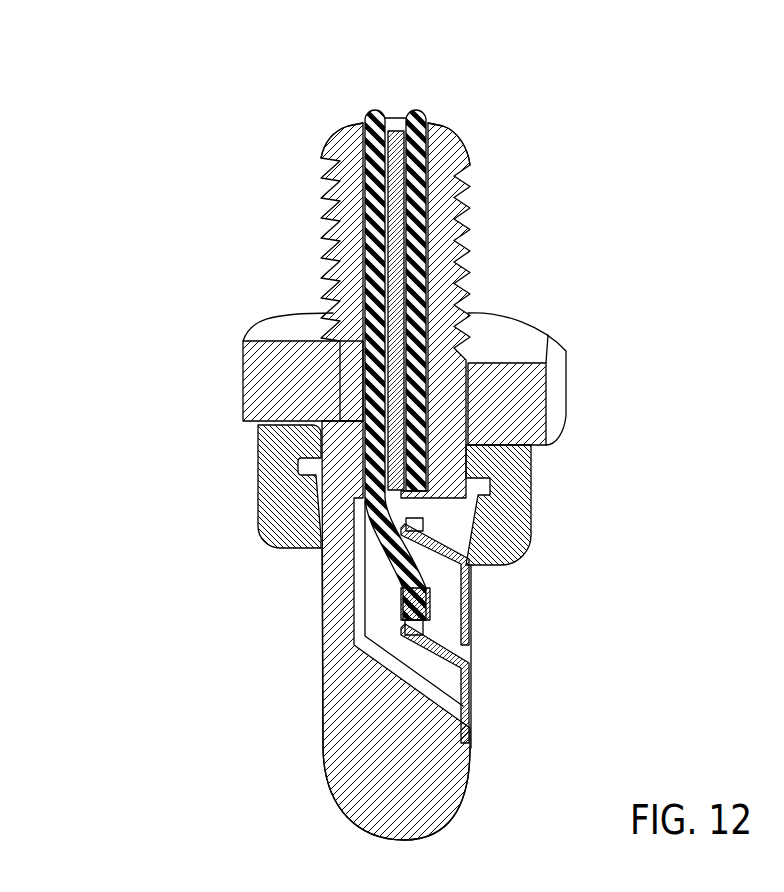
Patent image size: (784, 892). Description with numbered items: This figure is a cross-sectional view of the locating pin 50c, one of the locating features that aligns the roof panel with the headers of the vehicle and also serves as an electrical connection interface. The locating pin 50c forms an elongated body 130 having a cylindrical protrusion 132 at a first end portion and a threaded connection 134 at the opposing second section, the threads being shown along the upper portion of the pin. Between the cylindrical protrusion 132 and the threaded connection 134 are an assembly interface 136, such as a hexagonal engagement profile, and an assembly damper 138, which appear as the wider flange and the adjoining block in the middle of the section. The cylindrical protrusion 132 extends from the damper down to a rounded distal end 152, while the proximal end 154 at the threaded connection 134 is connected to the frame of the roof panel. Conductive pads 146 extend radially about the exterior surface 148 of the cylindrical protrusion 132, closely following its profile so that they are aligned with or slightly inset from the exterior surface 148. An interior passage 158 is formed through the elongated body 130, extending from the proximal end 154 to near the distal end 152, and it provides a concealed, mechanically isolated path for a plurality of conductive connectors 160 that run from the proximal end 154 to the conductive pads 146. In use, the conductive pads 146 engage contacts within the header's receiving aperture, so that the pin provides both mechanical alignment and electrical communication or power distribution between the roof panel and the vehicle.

The locating pin 50c is at (379, 438).
The elongated body 130 is at (390, 438).
The cylindrical protrusion 132 is at (319, 639).
The threaded connection 134 is at (407, 293).
The assembly interface 136 is at (555, 410).
The assembly damper 138 is at (522, 522).
The conductive pads 146 is at (460, 693).
The exterior surface 148 is at (313, 618).
The distal end 152 is at (307, 788).
The proximal end 154 is at (307, 183).
The interior passage 158 is at (407, 153).
The conductive connectors 160 is at (405, 102).